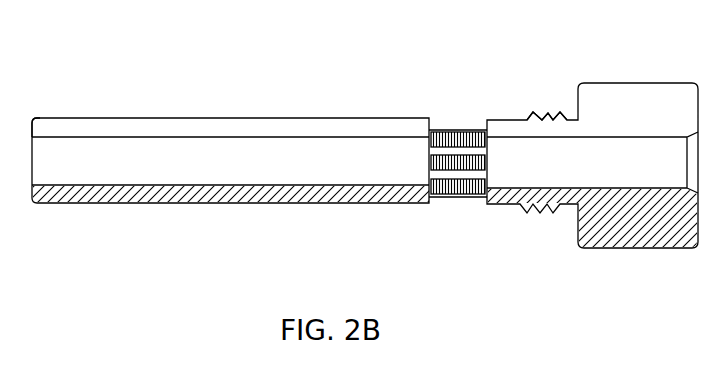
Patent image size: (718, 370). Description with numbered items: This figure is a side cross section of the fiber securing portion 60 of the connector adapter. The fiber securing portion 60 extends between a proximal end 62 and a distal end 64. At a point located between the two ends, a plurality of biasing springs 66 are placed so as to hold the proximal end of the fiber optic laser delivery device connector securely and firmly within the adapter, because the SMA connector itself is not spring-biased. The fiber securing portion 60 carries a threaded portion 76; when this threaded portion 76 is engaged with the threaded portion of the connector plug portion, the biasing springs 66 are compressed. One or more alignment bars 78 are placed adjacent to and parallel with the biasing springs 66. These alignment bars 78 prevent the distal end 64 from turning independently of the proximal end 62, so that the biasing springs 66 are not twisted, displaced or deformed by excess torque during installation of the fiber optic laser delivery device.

The fiber securing portion 60 is at (213, 137).
The proximal end 62 is at (57, 127).
The distal end 64 is at (663, 96).
The biasing springs 66 is at (468, 187).
The threaded portion 76 is at (533, 112).
The alignment bars 78 is at (472, 129).